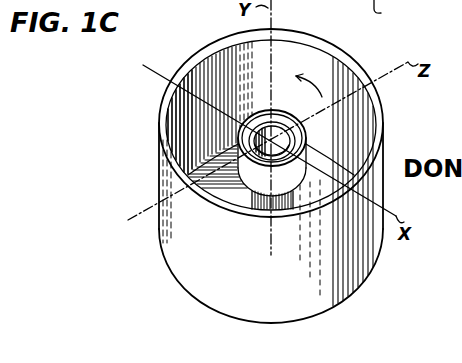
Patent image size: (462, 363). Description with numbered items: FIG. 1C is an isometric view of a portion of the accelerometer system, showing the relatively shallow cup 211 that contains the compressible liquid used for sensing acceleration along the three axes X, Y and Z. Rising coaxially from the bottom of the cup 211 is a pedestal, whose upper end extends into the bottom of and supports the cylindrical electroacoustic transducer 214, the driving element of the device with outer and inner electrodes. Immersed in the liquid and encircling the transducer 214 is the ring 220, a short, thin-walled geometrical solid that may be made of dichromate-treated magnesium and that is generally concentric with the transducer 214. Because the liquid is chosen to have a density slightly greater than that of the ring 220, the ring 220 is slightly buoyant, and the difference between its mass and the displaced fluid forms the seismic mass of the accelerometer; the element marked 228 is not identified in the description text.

The cup 211 is at (162, 245).
The cylindrical electroacoustic transducer 214 is at (266, 110).
The ring 220 is at (276, 110).
The component indicated at top (off-sheet) 228 is at (395, 12).